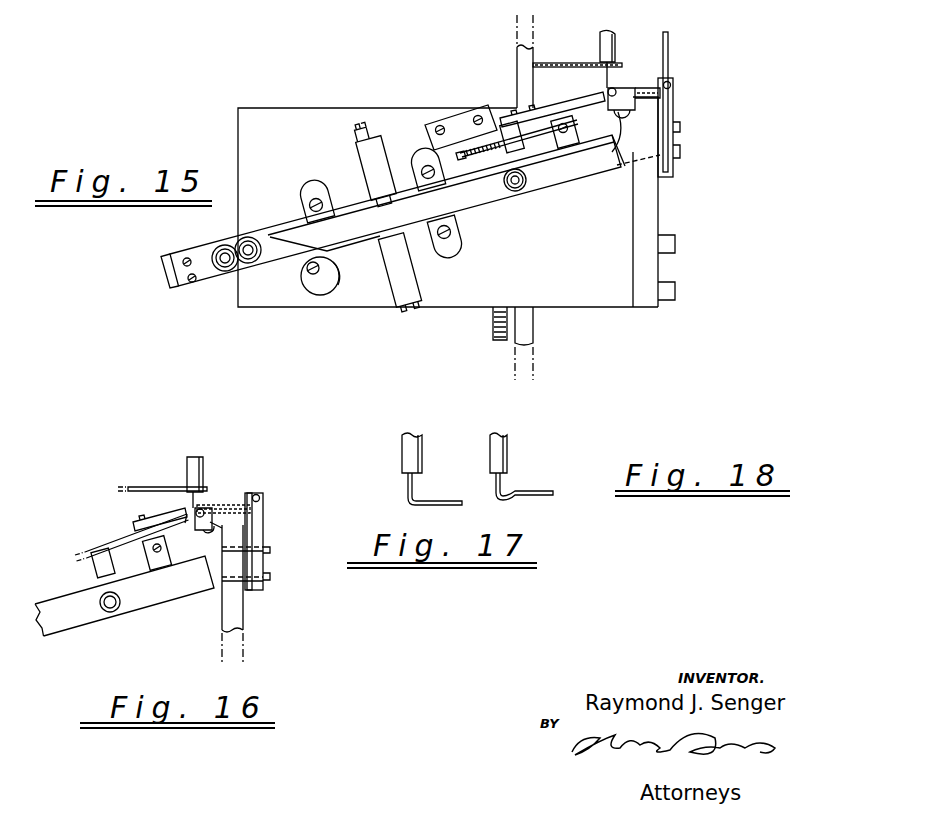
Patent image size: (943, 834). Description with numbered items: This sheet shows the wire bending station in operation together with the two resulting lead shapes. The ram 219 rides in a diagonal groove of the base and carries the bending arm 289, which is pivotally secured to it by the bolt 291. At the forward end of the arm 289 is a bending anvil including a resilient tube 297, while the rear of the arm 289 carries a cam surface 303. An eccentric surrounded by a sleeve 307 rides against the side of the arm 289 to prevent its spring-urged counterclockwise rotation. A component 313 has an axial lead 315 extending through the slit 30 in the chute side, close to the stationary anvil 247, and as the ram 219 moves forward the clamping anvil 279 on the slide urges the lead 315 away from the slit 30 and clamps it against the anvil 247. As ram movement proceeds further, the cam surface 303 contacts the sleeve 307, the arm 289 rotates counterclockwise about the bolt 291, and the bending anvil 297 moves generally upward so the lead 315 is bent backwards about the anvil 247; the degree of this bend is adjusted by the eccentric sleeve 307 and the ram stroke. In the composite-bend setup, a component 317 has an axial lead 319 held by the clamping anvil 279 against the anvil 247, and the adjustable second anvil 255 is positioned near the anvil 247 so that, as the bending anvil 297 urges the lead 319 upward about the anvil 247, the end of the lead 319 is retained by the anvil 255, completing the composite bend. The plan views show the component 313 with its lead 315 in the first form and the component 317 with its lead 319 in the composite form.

In FIG. 16, the longitudinal slit 30 is at (180, 500).
In FIG. 15, the ram 219 is at (270, 265).
In FIG. 15, the anvil 247 is at (607, 91).
In FIG. 16, the anvil 247 is at (205, 510).
In FIG. 15, the second anvil 255 is at (668, 55).
In FIG. 16, the second anvil 255 is at (243, 492).
In FIG. 16, the anvil 279 is at (185, 523).
In FIG. 15, the bending arm 289 is at (475, 210).
In FIG. 15, the bolt 291 is at (515, 190).
In FIG. 15, the resilient tube 297 is at (613, 150).
In FIG. 16, the resilient tube 297 is at (217, 530).
In FIG. 15, the cam surface 303 is at (273, 243).
In FIG. 15, the sleeve 307 is at (323, 287).
In FIG. 17, the component 313 is at (405, 457).
In FIG. 15, the axial lead 315 is at (630, 90).
In FIG. 17, the axial lead 315 is at (443, 503).
In FIG. 16, the component 317 is at (202, 460).
In FIG. 18, the component 317 is at (507, 457).
In FIG. 16, the axial lead 319 is at (267, 517).
In FIG. 18, the axial lead 319 is at (538, 492).